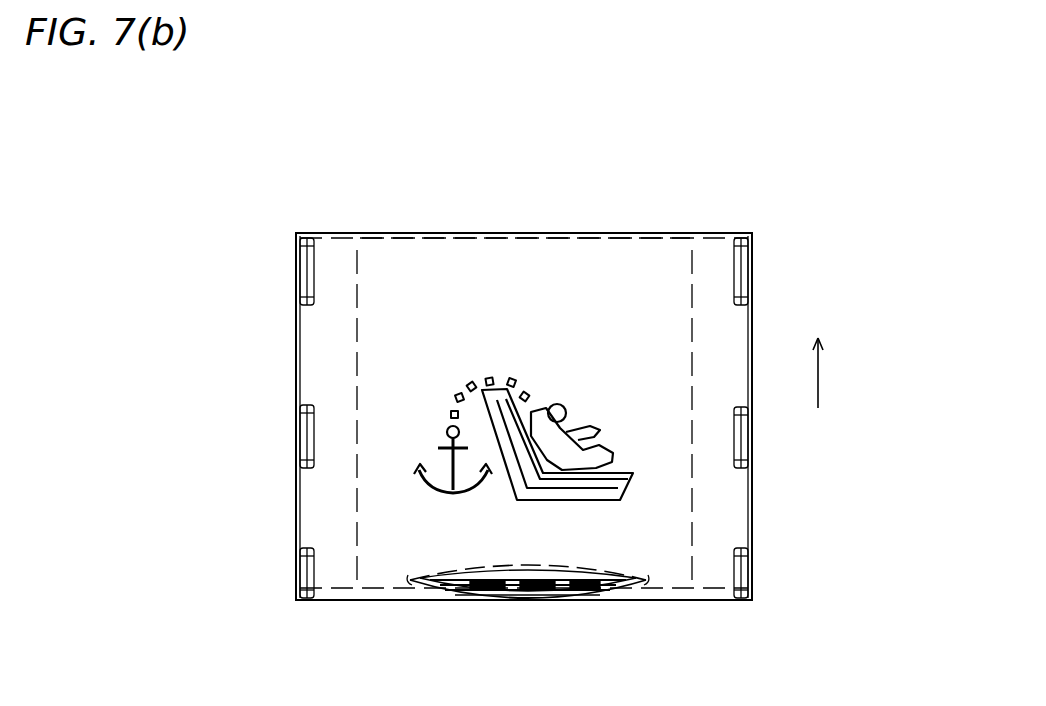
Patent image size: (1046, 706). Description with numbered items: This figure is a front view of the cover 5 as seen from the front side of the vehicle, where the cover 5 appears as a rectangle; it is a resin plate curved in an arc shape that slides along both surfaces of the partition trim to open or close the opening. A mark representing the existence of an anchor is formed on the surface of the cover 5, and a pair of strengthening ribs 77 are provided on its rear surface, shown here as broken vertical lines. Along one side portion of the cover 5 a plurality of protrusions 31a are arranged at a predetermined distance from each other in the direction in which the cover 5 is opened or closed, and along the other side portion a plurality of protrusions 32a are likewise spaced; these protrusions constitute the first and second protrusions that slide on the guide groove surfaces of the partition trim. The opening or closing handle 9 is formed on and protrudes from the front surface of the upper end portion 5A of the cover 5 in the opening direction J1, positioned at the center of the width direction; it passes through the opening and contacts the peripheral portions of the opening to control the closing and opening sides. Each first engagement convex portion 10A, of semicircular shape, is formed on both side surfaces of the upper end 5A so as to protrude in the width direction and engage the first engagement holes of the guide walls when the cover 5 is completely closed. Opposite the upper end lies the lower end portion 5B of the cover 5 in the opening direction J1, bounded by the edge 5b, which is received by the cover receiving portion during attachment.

The cover 5 is at (248, 179).
The strengthening ribs 77 is at (353, 257).
The lower end portion 5B is at (498, 250).
The edge 5b is at (585, 234).
The protrusions 31a is at (297, 272).
The protrusions 32a is at (745, 283).
The first engagement convex portion 10A is at (297, 580).
The opening direction J1 is at (830, 373).
The opening or closing handle 9 is at (508, 602).
The upper end portion 5A is at (663, 583).